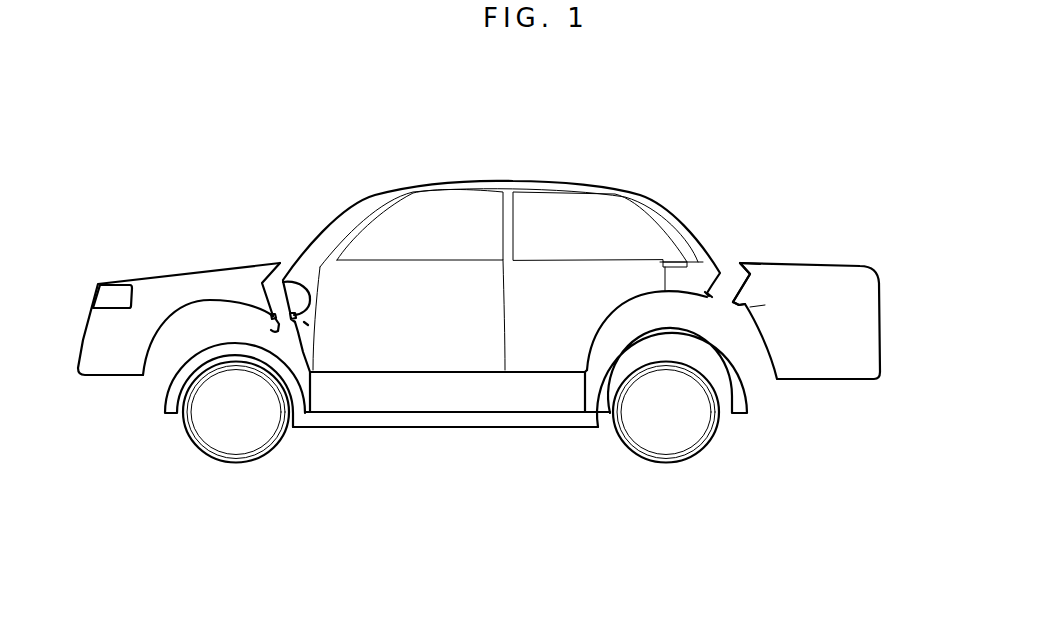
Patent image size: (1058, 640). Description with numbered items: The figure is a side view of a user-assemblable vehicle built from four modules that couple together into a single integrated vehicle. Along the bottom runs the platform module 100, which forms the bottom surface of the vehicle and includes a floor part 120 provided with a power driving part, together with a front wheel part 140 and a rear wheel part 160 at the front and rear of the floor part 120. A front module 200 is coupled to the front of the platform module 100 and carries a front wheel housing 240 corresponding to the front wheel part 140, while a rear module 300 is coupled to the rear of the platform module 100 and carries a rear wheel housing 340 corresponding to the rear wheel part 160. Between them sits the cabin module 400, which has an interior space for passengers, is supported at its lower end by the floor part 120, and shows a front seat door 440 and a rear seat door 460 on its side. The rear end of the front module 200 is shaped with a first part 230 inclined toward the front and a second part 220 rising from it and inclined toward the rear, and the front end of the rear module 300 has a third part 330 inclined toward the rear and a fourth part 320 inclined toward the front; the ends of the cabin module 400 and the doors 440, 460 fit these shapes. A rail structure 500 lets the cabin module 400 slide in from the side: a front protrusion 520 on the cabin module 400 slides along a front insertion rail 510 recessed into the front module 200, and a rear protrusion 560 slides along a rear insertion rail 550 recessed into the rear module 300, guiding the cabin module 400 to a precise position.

The platform module 100 is at (547, 429).
The floor part 120 is at (463, 420).
The front wheel part 140 is at (177, 392).
The rear wheel part 160 is at (742, 404).
The front module 200 is at (133, 273).
The second part 220 is at (271, 312).
The first part 230 is at (271, 313).
The front wheel housing 240 is at (268, 303).
The rear module 300 is at (862, 263).
The fourth part 320 is at (742, 264).
The third part 330 is at (745, 290).
The rear wheel housing 340 is at (750, 307).
The cabin module 400 is at (520, 179).
The front seat door 440 is at (422, 300).
The rear seat door 460 is at (570, 290).
The rail structure 500 is at (305, 322).
The front insertion rail 510 is at (292, 320).
The front protrusion 520 is at (297, 314).
The rear insertion rail 550 is at (733, 301).
The rear protrusion 560 is at (710, 300).